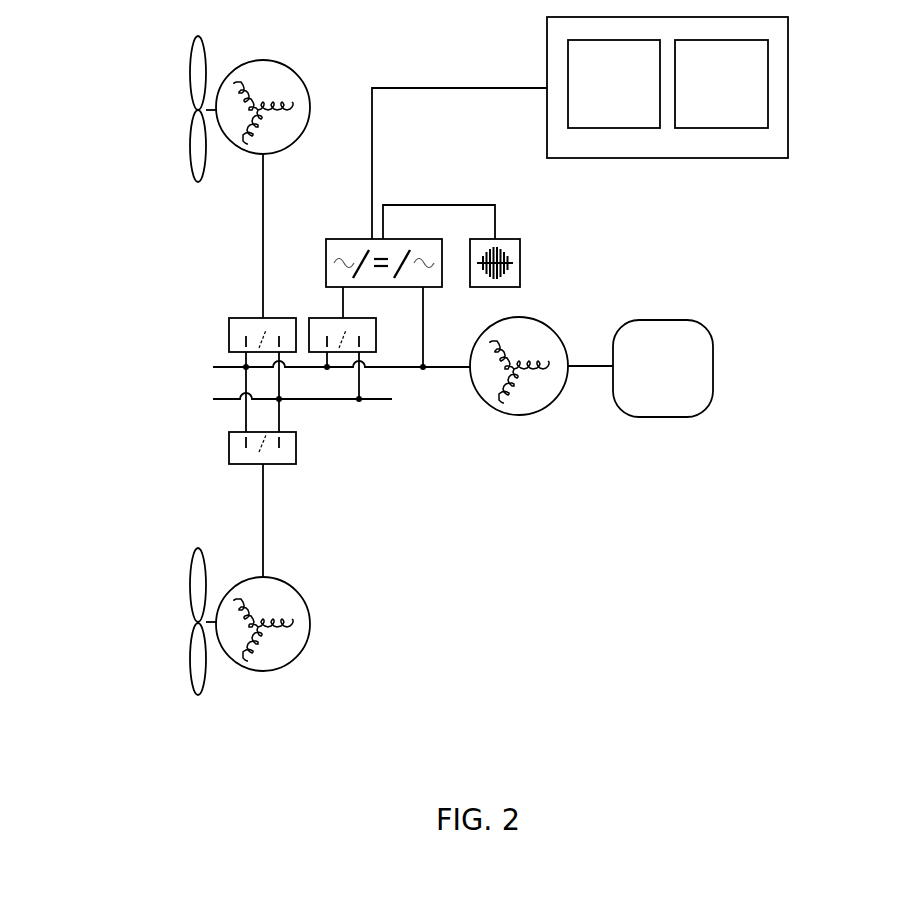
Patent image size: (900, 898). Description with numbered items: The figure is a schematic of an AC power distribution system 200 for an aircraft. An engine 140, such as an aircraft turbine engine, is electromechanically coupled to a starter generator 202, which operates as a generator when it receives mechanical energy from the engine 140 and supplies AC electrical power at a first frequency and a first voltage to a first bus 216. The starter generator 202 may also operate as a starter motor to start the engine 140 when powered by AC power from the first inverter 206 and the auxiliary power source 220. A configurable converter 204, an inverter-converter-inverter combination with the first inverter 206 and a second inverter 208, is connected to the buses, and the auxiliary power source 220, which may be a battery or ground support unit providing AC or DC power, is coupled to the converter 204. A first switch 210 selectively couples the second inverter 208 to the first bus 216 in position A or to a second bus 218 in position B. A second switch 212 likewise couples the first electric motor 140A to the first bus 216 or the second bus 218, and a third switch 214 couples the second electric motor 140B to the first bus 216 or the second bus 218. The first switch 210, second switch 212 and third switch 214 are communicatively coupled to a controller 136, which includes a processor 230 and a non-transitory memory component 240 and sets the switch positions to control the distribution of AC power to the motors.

The AC power distribution system 200 is at (86, 84).
The controller 136 is at (721, 87).
The processor 230 is at (623, 96).
The non-transitory memory component 240 is at (730, 96).
The second electric motor 140B is at (250, 105).
The first electric motor 140A is at (250, 632).
The engine 140 is at (659, 417).
The starter generator 202 is at (517, 415).
The configurable converter 204 is at (372, 228).
The first inverter 206 is at (417, 242).
The second inverter 208 is at (327, 267).
The first switch 210 is at (362, 317).
The second switch 212 is at (229, 450).
The third switch 214 is at (233, 317).
The first bus 216 is at (195, 367).
The second bus 218 is at (195, 399).
The auxiliary power source 220 is at (522, 248).